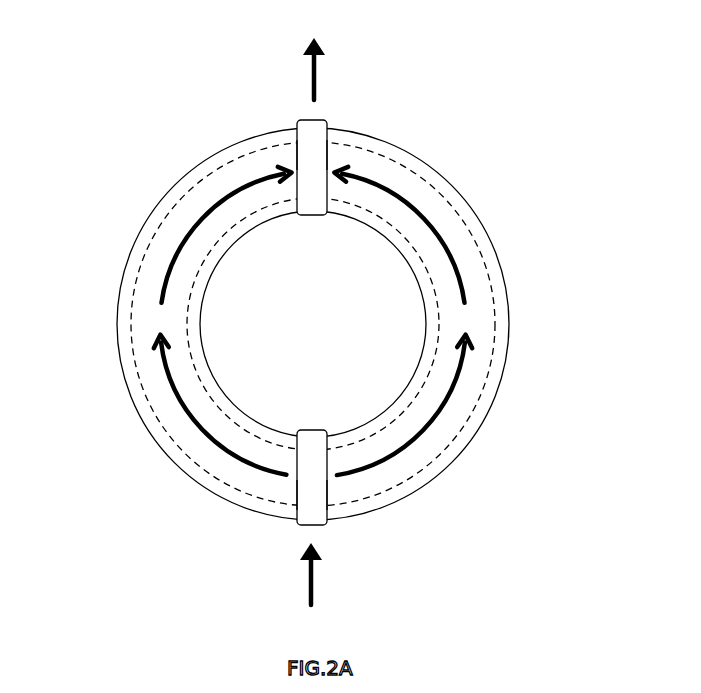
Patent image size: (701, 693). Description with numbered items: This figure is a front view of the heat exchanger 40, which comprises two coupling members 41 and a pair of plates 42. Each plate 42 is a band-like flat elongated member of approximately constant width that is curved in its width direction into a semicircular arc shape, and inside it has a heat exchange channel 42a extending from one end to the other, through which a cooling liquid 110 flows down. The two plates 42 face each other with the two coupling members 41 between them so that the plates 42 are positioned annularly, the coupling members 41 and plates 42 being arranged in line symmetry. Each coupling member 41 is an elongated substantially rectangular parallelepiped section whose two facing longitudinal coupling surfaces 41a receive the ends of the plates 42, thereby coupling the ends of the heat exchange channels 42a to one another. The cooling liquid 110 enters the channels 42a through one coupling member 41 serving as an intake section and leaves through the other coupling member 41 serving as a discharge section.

The heat exchanger 40 is at (313, 323).
The coupling member 41 is at (312, 130).
The coupling surface 41a is at (296, 150).
The plate 42 is at (498, 366).
The heat exchange channel 42a is at (492, 270).
The cooling liquid 110 is at (313, 323).